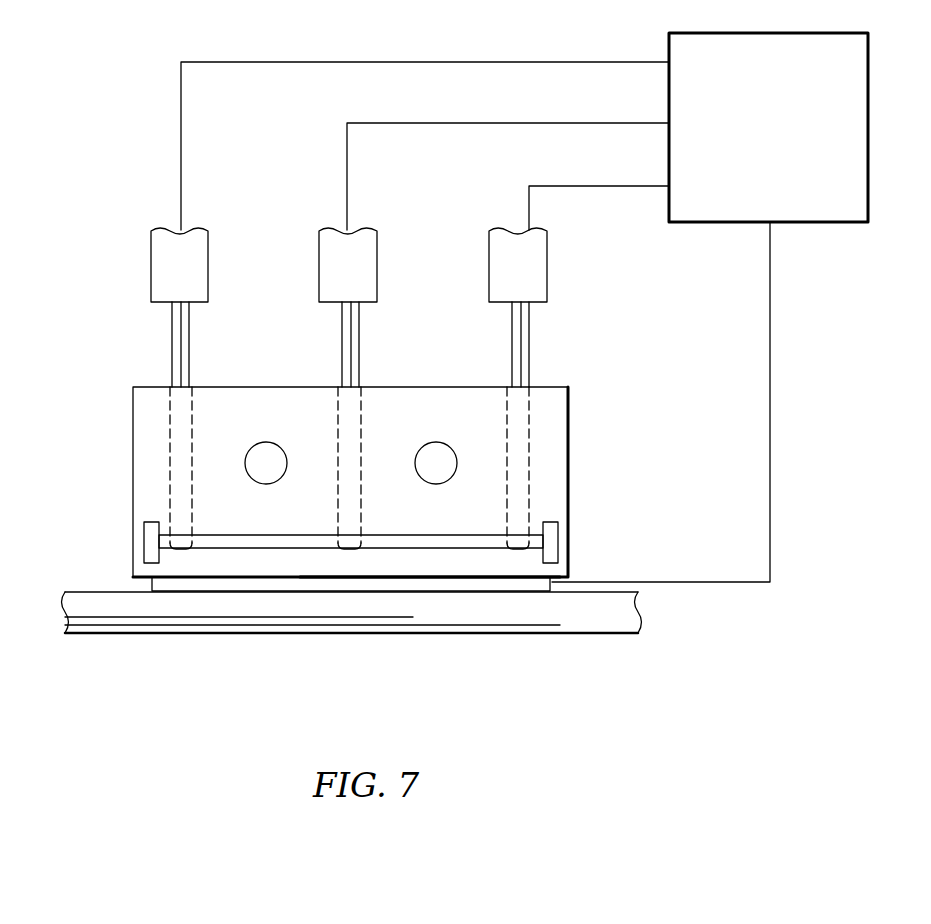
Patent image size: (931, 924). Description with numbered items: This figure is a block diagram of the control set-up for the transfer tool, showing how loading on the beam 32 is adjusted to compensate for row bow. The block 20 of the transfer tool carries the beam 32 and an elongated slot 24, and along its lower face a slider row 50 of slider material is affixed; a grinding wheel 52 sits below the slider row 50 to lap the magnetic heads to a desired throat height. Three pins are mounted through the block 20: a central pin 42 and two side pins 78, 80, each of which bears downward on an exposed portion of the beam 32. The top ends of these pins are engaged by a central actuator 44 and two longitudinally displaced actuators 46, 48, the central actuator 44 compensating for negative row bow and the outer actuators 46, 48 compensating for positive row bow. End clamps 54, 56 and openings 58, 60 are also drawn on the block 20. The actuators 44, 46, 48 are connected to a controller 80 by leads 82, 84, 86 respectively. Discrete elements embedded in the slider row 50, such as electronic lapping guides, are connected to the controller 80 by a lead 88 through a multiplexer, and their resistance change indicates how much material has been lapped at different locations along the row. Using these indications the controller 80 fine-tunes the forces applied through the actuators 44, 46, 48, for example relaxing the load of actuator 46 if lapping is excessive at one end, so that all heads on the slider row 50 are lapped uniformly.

The block 20 is at (280, 417).
The elongated slot 24 is at (280, 540).
The beam 32 is at (433, 563).
The pin 42 is at (353, 413).
The actuator 44 is at (368, 267).
The actuator 46 is at (198, 267).
The actuator 48 is at (537, 267).
The slider row 50 is at (188, 585).
The grinding wheel 52 is at (600, 615).
The clamp 54 is at (148, 540).
The clamp 56 is at (552, 540).
The left hole 58 is at (257, 462).
The right hole 60 is at (445, 460).
The pin 78 is at (180, 476).
The controller 80 is at (747, 171).
The lead 82 is at (432, 123).
The lead 84 is at (320, 62).
The lead 86 is at (552, 186).
The lead 88 is at (770, 402).